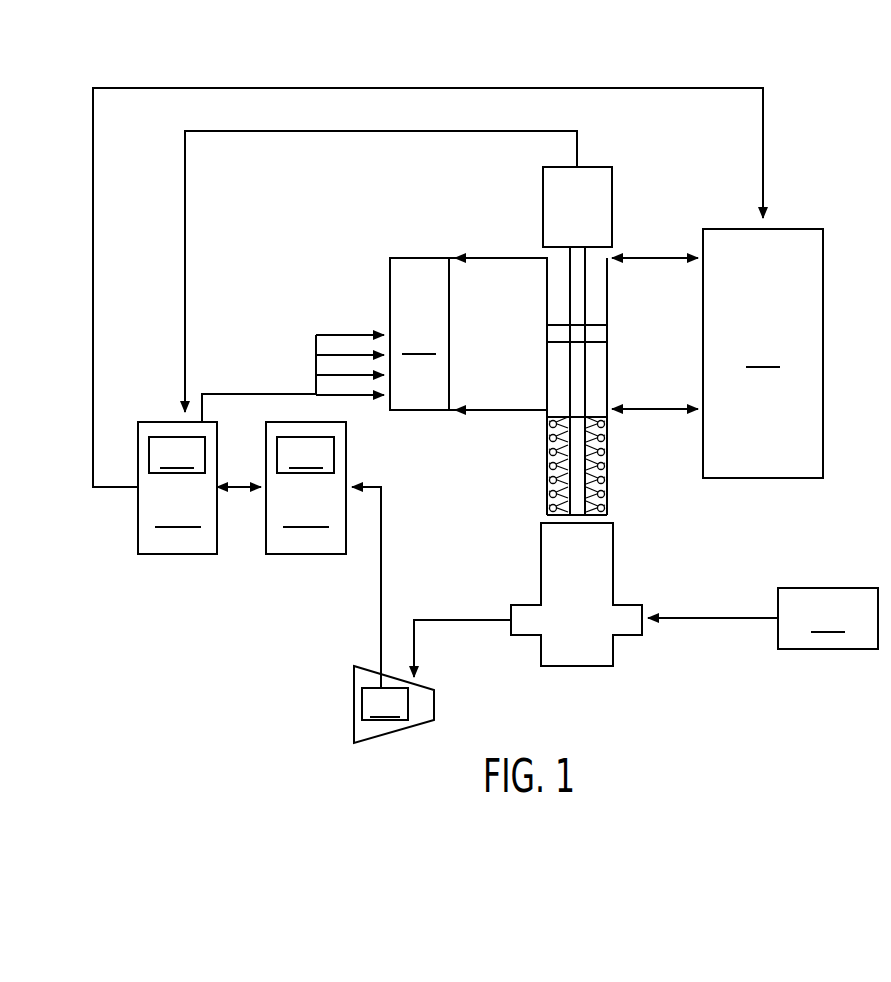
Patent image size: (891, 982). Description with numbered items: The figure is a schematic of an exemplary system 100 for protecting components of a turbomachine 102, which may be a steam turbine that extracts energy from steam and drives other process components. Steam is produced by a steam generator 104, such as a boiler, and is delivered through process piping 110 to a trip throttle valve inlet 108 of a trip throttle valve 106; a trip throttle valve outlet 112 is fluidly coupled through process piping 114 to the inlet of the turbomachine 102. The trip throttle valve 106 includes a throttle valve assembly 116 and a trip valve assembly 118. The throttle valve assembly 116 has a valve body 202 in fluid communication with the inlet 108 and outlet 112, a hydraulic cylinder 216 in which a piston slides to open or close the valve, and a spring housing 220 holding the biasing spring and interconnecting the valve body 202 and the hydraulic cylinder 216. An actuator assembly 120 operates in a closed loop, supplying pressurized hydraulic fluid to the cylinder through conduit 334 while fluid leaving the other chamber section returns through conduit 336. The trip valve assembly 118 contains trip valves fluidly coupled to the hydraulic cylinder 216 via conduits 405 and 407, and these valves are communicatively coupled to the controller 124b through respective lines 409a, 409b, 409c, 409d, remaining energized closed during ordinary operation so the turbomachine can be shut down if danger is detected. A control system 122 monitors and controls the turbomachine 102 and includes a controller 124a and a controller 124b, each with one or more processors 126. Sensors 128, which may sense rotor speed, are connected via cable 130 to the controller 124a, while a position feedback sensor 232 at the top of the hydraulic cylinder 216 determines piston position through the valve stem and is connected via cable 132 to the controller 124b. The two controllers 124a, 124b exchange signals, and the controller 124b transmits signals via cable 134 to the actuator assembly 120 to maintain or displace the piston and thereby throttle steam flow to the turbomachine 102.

The system 100 is at (150, 53).
The turbomachine 102 is at (395, 733).
The steam generator 104 is at (828, 618).
The trip throttle valve 106 is at (684, 195).
The trip throttle valve inlet 108 is at (625, 605).
The process piping 110 is at (712, 618).
The trip throttle valve outlet 112 is at (528, 605).
The process piping 114 is at (463, 620).
The throttle valve assembly 116 is at (494, 486).
The trip valve assembly 118 is at (468, 334).
The actuator assembly 120 is at (763, 353).
The control system 122 is at (100, 520).
The controller 124a is at (281, 488).
The controller 124b is at (177, 488).
The processor 126 is at (241, 455).
The sensors 128 is at (385, 704).
The cable 130 is at (381, 590).
The cable 132 is at (380, 131).
The cable 134 is at (430, 88).
The valve body 202 is at (541, 565).
The hydraulic cylinder 216 is at (547, 312).
The spring housing 220 is at (547, 470).
The position feedback sensor 232 is at (600, 167).
The conduit 334 is at (652, 410).
The conduit 336 is at (628, 257).
The conduit 405 is at (480, 258).
The conduit 407 is at (492, 410).
The line 409a is at (330, 335).
The line 409b is at (365, 355).
The line 409c is at (357, 377).
The line 409d is at (336, 396).